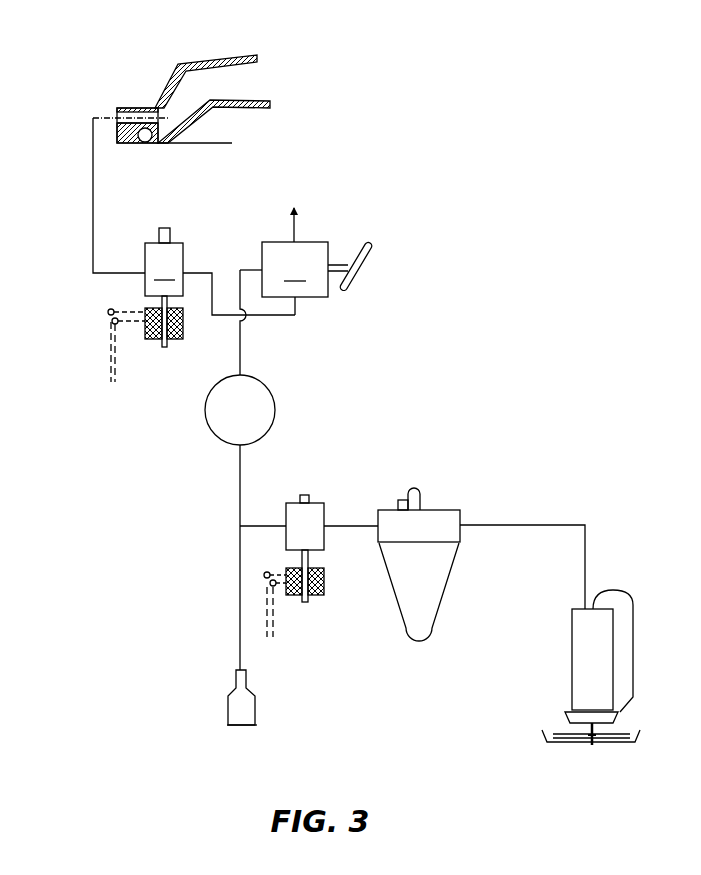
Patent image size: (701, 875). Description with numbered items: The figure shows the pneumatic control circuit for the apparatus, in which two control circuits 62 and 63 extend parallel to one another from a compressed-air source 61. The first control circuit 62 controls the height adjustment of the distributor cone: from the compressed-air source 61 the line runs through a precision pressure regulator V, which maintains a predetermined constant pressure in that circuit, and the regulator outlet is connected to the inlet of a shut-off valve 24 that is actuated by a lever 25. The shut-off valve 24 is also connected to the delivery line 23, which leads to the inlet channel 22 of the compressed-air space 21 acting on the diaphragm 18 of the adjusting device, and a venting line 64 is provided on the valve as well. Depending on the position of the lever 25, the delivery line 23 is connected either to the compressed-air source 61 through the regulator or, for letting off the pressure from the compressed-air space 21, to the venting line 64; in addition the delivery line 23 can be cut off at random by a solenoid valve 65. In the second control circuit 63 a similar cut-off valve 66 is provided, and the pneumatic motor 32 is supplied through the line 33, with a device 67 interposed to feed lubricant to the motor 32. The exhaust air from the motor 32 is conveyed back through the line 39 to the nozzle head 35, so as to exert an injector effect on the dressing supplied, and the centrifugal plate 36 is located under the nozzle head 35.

The diaphragm 18 is at (250, 100).
The compressed-air space 21 is at (230, 80).
The inlet channel 22 is at (142, 115).
The delivery line 23 is at (92, 205).
The shut-off valve 24 is at (284, 269).
The lever 25 is at (365, 275).
The pneumatic motor 32 is at (590, 628).
The line 33 is at (558, 523).
The nozzle head 35 is at (567, 713).
The centrifugal plate 36 is at (537, 733).
The line 39 is at (632, 592).
The compressed-air source 61 is at (228, 703).
The control circuit 62 is at (197, 367).
The control circuit 63 is at (385, 487).
The venting line 64 is at (296, 232).
The solenoid valve 65 is at (145, 305).
The cut-off valve 66 is at (303, 532).
The device 67 is at (433, 527).